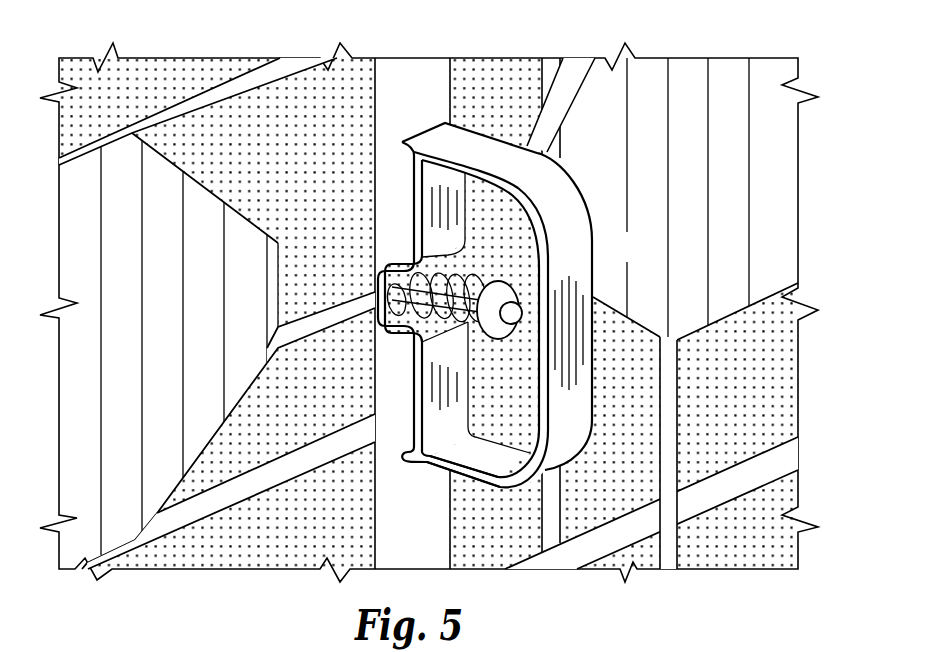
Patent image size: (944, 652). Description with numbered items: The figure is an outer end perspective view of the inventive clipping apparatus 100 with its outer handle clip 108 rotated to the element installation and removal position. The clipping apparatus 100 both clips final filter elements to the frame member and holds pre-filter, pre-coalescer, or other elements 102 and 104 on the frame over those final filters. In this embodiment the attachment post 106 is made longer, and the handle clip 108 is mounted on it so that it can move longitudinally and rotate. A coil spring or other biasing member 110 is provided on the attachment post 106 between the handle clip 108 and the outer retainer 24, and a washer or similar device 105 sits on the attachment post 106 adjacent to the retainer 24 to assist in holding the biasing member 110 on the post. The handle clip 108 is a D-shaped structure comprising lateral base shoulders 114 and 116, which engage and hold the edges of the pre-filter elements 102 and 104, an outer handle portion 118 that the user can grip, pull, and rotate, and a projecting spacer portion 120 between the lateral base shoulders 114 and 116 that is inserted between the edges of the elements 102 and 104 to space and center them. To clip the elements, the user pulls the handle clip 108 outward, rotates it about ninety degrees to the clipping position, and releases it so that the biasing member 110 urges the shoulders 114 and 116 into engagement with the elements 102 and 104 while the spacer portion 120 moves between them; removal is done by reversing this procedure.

The clipping apparatus 100 is at (424, 271).
The pre-filter element 102 is at (199, 170).
The pre-filter element 104 is at (697, 238).
The washer 105 is at (475, 337).
The attachment post 106 is at (420, 333).
The handle clip 108 is at (422, 163).
The biasing member 110 is at (377, 291).
The lateral base shoulder 114 is at (432, 223).
The lateral base shoulder 116 is at (430, 386).
The outer handle portion 118 is at (568, 309).
The projecting spacer portion 120 is at (278, 348).
The retainer 24 is at (520, 270).